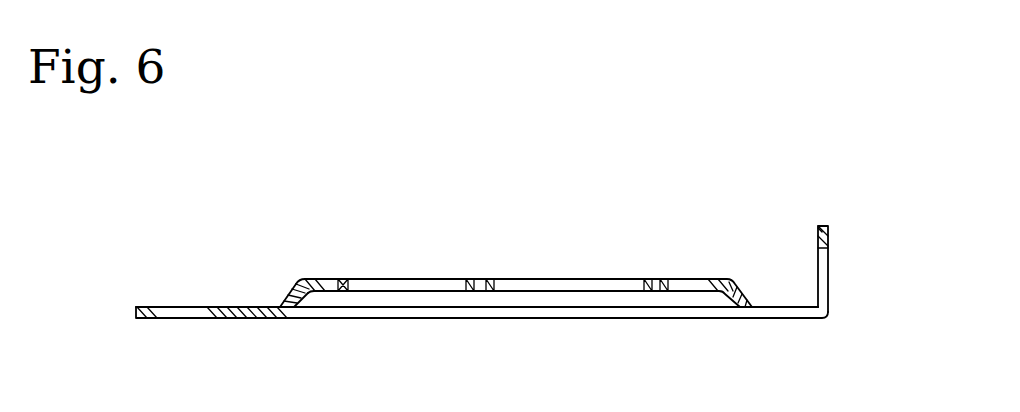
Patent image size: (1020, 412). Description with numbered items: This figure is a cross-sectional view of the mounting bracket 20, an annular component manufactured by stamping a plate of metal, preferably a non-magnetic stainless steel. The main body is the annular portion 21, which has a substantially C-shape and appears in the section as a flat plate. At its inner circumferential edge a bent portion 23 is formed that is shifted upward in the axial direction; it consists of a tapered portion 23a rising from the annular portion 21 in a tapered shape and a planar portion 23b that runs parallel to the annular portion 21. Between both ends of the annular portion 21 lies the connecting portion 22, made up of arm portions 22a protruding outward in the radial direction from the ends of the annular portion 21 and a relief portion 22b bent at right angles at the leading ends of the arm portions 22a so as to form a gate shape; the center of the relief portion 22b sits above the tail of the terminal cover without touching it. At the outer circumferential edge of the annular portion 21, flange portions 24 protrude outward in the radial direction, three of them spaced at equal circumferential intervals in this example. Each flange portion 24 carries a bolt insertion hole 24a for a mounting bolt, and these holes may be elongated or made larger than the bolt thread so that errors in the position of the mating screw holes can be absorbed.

The mounting bracket 20 is at (638, 223).
The annular portion 21 is at (262, 306).
The connecting portion 22 is at (853, 283).
The arm portions 22a is at (778, 305).
The relief portion 22b is at (832, 232).
The bent portion 23 is at (318, 280).
The tapered portion 23a is at (290, 286).
The planar portion 23b is at (303, 280).
The flange portions 24 is at (228, 320).
The bolt insertion holes 24a is at (168, 306).